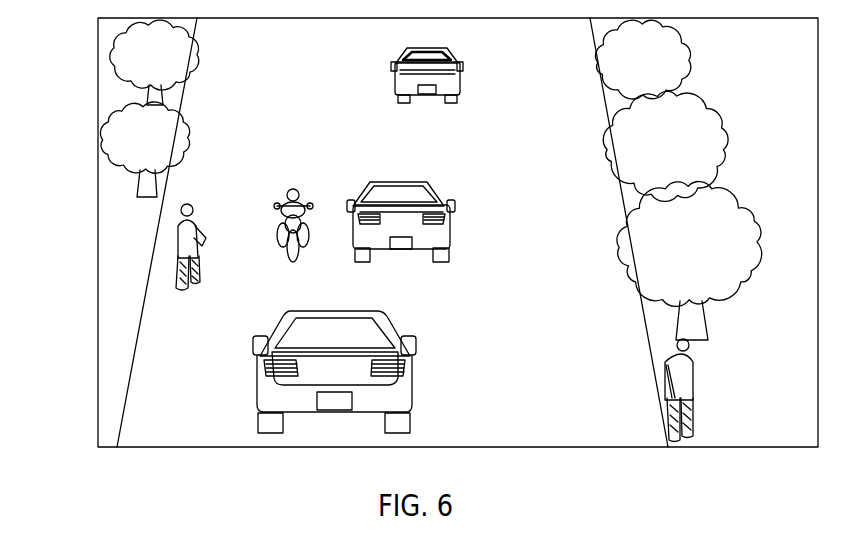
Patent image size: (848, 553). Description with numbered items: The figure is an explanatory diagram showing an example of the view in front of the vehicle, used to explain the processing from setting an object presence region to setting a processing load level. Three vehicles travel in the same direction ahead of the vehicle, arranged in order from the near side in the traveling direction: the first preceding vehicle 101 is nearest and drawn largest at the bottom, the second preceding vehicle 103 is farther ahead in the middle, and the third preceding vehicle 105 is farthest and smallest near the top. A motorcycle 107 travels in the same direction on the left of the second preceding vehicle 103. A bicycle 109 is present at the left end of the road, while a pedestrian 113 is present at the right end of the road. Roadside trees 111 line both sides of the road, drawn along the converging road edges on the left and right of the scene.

The first preceding vehicle 101 is at (385, 318).
The second preceding vehicle 103 is at (440, 190).
The third preceding vehicle 105 is at (450, 52).
The motorcycle 107 is at (293, 186).
The bicycle 109 is at (198, 200).
The roadside trees 111 is at (118, 55).
The pedestrian 113 is at (696, 392).